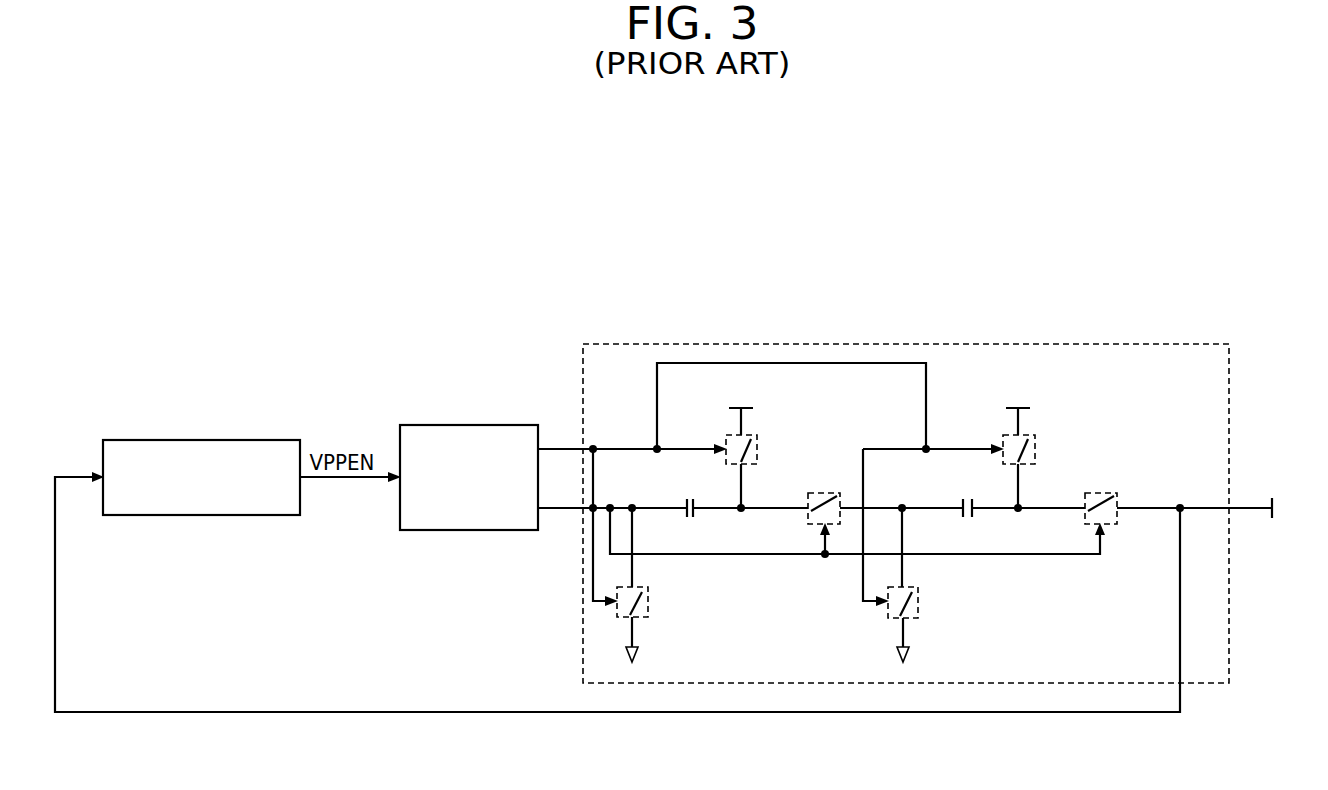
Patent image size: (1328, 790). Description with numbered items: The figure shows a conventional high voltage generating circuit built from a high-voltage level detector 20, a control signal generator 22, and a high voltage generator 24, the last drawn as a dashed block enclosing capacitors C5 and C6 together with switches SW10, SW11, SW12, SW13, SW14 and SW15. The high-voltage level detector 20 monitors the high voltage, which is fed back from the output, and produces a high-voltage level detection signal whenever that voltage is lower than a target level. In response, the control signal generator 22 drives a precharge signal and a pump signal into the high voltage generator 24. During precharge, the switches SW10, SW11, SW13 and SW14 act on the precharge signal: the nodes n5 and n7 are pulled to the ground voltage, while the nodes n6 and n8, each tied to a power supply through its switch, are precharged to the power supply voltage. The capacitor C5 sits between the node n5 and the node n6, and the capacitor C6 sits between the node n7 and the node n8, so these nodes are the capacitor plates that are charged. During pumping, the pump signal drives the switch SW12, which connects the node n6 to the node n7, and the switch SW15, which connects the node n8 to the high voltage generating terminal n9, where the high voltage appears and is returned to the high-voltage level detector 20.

The high-voltage level detector 20 is at (240, 440).
The control signal generator 22 is at (470, 425).
The high voltage generator 24 is at (887, 344).
The switch SW10 is at (650, 602).
The switch SW11 is at (759, 449).
The switch SW12 is at (808, 522).
The switch SW13 is at (920, 601).
The switch SW14 is at (1037, 449).
The switch SW15 is at (1118, 496).
The capacitor C5 is at (690, 495).
The capacitor C6 is at (968, 495).
The node n5 is at (633, 496).
The node n6 is at (754, 496).
The node n7 is at (901, 496).
The node n8 is at (1031, 496).
The high voltage generating terminal n9 is at (1192, 518).